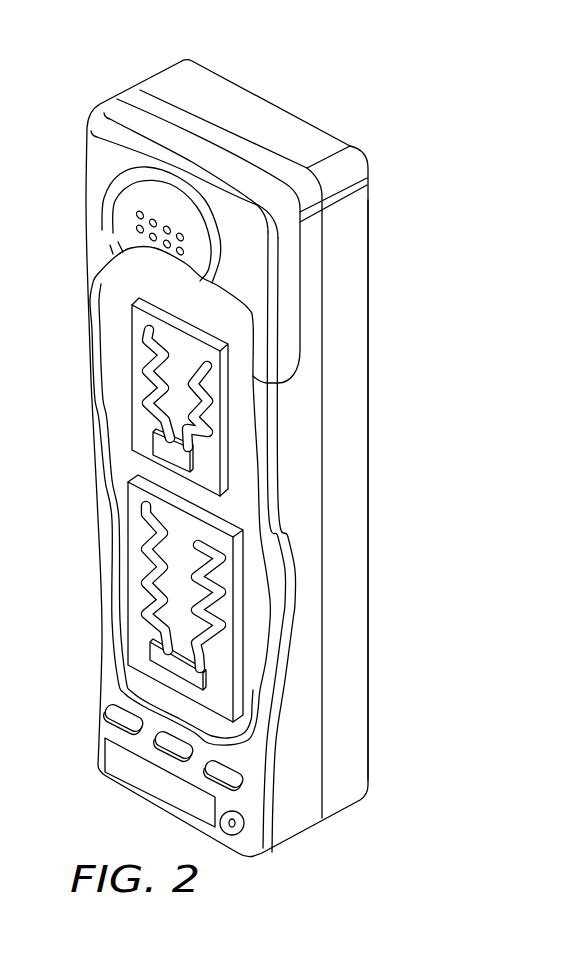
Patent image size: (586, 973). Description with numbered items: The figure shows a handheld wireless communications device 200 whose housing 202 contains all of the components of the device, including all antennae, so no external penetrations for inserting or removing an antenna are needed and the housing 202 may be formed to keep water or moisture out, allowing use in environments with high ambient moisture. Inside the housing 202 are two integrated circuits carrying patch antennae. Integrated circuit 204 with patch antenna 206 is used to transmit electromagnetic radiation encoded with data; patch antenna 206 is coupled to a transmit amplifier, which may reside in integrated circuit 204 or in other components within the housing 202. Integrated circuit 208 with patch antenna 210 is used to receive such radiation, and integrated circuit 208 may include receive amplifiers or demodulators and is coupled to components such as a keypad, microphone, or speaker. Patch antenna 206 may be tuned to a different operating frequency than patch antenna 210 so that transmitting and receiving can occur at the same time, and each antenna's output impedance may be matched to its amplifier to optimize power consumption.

The handheld wireless communications device 200 is at (123, 63).
The housing 202 is at (370, 496).
The integrated circuit 204 is at (128, 640).
The patch antenna 206 is at (142, 539).
The integrated circuit 208 is at (132, 387).
The patch antenna 210 is at (144, 329).